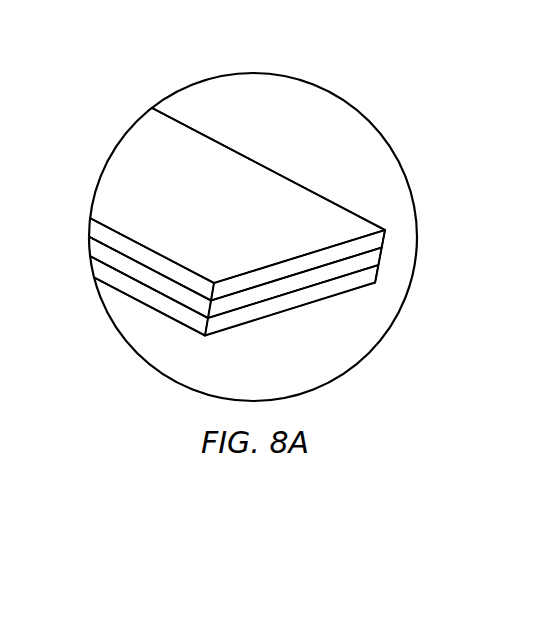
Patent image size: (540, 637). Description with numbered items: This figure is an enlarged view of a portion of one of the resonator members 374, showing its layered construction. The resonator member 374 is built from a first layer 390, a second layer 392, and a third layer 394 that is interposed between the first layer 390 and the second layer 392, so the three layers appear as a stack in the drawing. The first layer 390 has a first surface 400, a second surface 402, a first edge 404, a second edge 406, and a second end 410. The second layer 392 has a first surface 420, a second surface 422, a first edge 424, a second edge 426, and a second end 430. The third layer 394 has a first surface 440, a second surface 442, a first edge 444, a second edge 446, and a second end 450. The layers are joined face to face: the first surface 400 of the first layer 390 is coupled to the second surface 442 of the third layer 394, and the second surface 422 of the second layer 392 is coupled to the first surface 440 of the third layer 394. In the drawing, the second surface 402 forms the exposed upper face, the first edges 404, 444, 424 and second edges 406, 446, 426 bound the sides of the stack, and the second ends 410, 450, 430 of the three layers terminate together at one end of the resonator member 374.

The resonator member 374 is at (292, 165).
The second surface 402 is at (268, 223).
The second edge 406 is at (168, 116).
The first edge 404 is at (103, 232).
The first edge 444 is at (112, 259).
The first edge 424 is at (118, 283).
The first surface 400 is at (172, 283).
The first surface 440 is at (182, 308).
The first surface 420 is at (192, 333).
The second surface 442 is at (272, 278).
The second surface 422 is at (243, 303).
The second end 410 is at (302, 263).
The second end 450 is at (280, 288).
The second end 430 is at (250, 313).
The first layer 390 is at (372, 242).
The second edge 446 is at (370, 260).
The third layer 394 is at (367, 277).
The second edge 426 is at (378, 270).
The second layer 392 is at (377, 278).